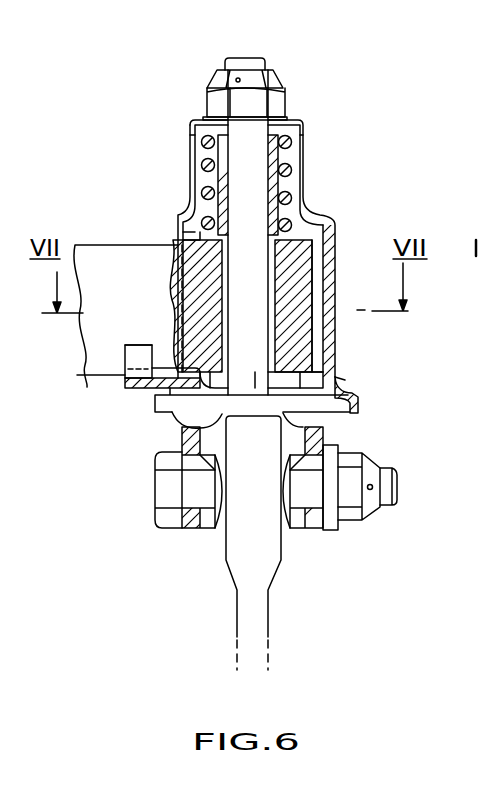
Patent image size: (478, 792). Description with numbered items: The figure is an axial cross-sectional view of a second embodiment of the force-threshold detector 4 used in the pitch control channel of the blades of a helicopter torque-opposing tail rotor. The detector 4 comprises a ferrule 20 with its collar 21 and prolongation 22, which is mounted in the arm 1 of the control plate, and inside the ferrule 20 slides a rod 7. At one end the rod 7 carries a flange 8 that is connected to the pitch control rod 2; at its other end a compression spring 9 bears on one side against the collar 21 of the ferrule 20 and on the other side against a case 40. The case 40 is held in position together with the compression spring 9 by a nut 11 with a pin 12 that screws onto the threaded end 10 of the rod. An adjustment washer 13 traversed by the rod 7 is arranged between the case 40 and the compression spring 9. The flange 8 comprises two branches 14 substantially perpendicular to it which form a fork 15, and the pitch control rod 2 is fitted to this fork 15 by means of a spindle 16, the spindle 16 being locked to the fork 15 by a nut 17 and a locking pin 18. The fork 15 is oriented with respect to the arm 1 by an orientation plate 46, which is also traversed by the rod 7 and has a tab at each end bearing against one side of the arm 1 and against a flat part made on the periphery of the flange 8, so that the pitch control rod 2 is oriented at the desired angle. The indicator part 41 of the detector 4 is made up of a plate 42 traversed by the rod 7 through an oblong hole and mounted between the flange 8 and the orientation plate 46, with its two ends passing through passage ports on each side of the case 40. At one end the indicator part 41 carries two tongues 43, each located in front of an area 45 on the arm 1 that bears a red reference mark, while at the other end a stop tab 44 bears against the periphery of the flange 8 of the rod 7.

The arm of the control plate 1 is at (91, 258).
The pitch control rod 2 is at (270, 604).
The detector 4 is at (317, 130).
The rod 7 is at (291, 167).
The flange 8 is at (322, 405).
The compression spring 9 is at (202, 185).
The threaded end 10 is at (236, 68).
The nut 11 is at (290, 95).
The pin 12 is at (236, 79).
The adjustment washer 13 is at (190, 135).
The branches 14 is at (192, 532).
The fork 15 is at (172, 445).
The spindle 16 is at (187, 500).
The nut 17 is at (350, 514).
The locking pin 18 is at (393, 480).
The ferrule 20 is at (290, 281).
The collar 21 is at (180, 232).
The prolongation 22 is at (300, 197).
The case 40 is at (335, 240).
The indicator part 41 is at (352, 379).
The plate 42 is at (142, 389).
The tongues 43 is at (126, 362).
The stop tab 44 is at (357, 398).
The area 45 is at (140, 344).
The orientation plate 46 is at (320, 338).